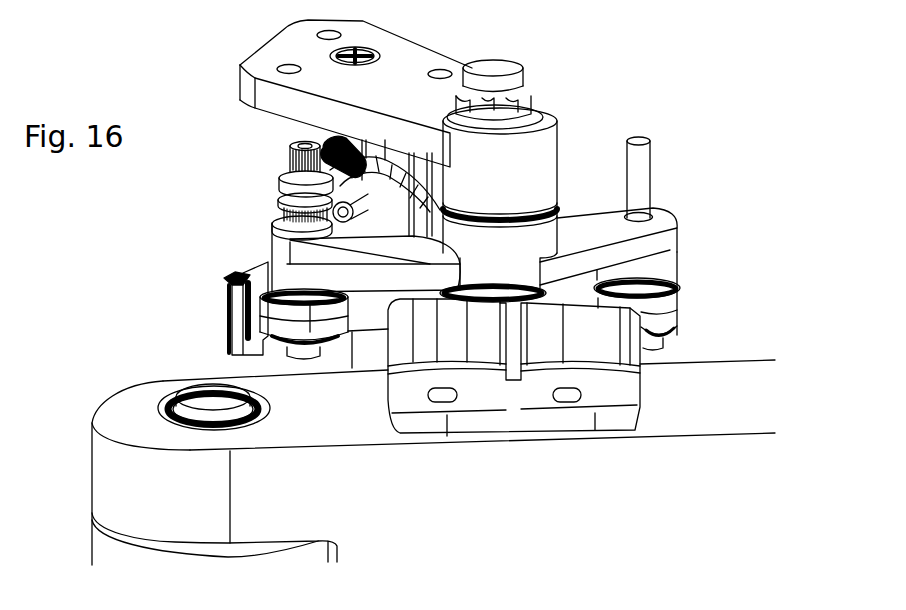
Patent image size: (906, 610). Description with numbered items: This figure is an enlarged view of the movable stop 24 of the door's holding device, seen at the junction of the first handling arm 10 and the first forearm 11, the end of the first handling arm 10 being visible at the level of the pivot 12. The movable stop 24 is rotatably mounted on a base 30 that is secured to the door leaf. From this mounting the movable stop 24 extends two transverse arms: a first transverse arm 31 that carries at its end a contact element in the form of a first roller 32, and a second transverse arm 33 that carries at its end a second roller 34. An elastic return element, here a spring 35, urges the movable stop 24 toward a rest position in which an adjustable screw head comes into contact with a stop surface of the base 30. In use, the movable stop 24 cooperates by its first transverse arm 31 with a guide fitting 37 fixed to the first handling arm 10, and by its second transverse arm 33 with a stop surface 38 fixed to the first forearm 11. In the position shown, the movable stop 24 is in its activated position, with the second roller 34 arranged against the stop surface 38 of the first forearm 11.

The first handling arm 10 is at (718, 380).
The first forearm 11 is at (228, 370).
The pivot 12 is at (212, 398).
The movable stop 24 is at (520, 250).
The base 30 is at (412, 62).
The first transverse arm 31 is at (653, 235).
The first roller 32 is at (675, 305).
The second transverse arm 33 is at (293, 247).
The second roller 34 is at (288, 332).
The spring 35 is at (335, 145).
The guide fitting 37 is at (598, 350).
The stop surface 38 is at (243, 275).